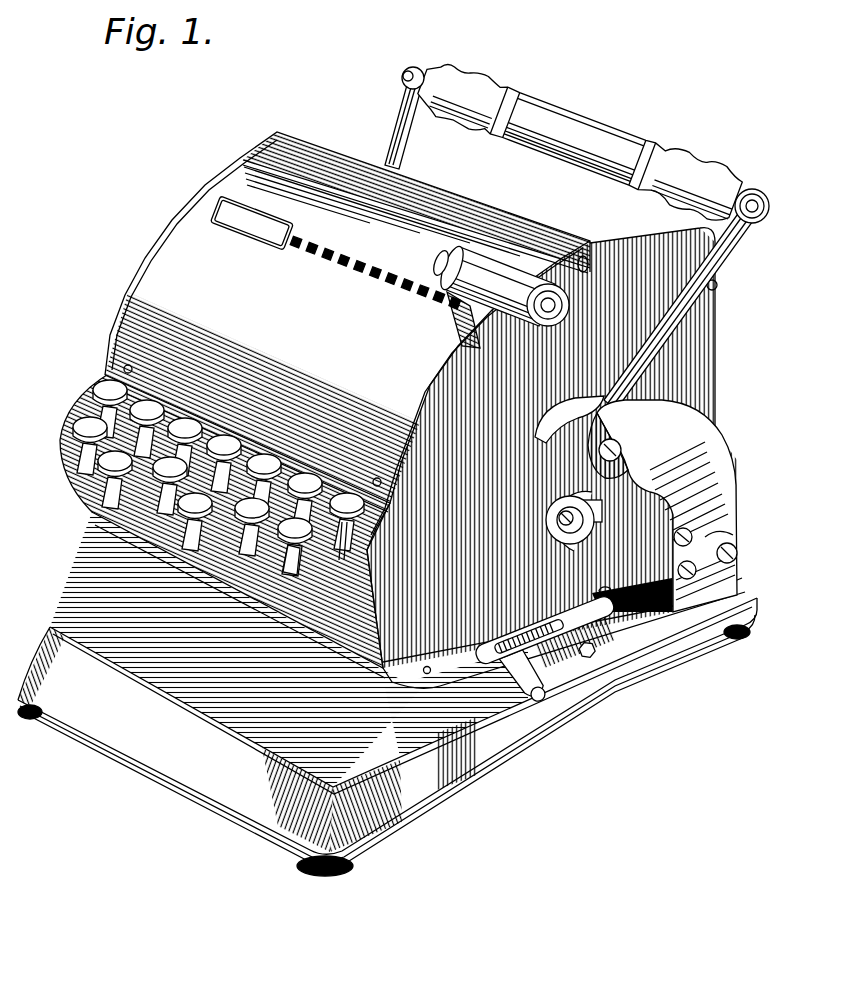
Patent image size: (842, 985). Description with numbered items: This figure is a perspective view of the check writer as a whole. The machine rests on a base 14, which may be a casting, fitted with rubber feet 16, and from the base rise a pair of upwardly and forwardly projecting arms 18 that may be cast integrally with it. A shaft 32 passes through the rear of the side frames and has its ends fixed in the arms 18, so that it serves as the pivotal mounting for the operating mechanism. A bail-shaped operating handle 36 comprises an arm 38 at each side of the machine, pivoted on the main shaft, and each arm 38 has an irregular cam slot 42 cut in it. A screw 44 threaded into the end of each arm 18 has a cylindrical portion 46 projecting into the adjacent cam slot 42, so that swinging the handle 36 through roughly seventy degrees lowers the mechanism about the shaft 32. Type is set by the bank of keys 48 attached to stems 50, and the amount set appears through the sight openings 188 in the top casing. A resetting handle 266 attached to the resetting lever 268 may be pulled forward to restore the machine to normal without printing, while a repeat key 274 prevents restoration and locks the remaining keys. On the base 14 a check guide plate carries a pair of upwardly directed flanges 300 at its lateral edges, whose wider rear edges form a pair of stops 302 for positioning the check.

The base 14 is at (387, 689).
The rubber feet 16 is at (38, 720).
The arms 18 is at (703, 443).
The shaft 32 is at (738, 548).
The operating handle 36 is at (620, 137).
The arm 38 is at (412, 147).
The cam slot 42 is at (584, 538).
The screw 44 is at (623, 446).
The cylindrical portion 46 is at (300, 566).
The keys 48 is at (80, 422).
The stems 50 is at (162, 540).
The sight openings 188 is at (354, 288).
The resetting handle 266 is at (500, 285).
The resetting lever 268 is at (456, 338).
The repeat key 274 is at (345, 520).
The flanges 300 is at (553, 667).
The stops 302 is at (607, 604).